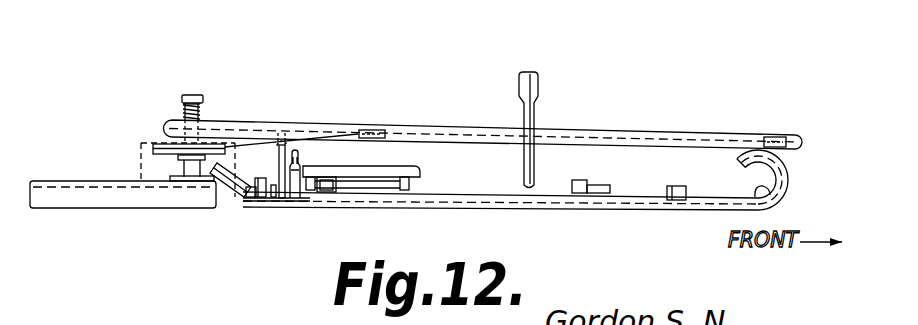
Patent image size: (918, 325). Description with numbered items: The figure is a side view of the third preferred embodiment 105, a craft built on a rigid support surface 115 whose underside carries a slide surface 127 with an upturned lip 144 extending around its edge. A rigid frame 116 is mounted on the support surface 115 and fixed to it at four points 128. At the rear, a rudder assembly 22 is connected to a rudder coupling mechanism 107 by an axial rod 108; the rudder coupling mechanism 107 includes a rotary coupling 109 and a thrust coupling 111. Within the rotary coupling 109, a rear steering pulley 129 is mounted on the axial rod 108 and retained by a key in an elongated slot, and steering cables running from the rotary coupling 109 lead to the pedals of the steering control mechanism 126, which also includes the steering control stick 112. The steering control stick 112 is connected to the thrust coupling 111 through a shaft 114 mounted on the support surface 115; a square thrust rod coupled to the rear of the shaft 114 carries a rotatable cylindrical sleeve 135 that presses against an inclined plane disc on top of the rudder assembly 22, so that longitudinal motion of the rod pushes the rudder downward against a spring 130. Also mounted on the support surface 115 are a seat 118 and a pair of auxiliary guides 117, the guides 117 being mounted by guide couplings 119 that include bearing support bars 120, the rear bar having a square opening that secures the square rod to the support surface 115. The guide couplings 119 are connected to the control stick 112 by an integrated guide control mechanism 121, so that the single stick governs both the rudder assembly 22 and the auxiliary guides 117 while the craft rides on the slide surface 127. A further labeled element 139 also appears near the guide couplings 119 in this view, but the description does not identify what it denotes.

The rudder assembly 22 is at (80, 208).
The third preferred embodiment 105 is at (752, 102).
The rudder coupling mechanism 107 is at (185, 80).
The axial rod 108 is at (186, 95).
The rotary coupling 109 is at (138, 102).
The thrust coupling 111 is at (218, 216).
The steering control stick 112 is at (538, 94).
The shaft 114 is at (445, 178).
The support surface 115 is at (790, 173).
The frame 116 is at (657, 130).
The auxiliary guides 117 is at (632, 193).
The seat 118 is at (387, 167).
The guide couplings 119 is at (295, 212).
The bearing support bars 120 is at (686, 188).
The integrated guide control mechanism 121 is at (310, 155).
The steering control mechanism 126 is at (618, 108).
The slide surface 127 is at (593, 212).
The points 128 is at (767, 145).
The rear steering pulley 129 is at (155, 143).
The spring 130 is at (203, 112).
The rotatable cylindrical sleeve 135 is at (233, 200).
The bracket 139 is at (300, 200).
The upturned lip 144 is at (763, 193).